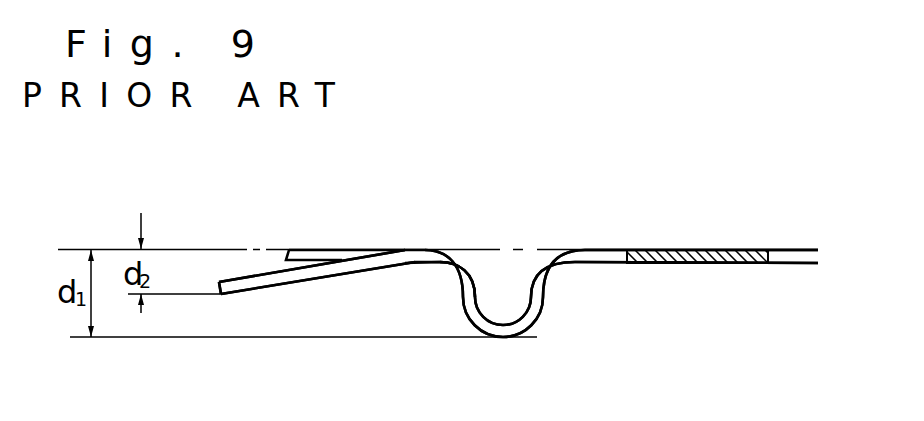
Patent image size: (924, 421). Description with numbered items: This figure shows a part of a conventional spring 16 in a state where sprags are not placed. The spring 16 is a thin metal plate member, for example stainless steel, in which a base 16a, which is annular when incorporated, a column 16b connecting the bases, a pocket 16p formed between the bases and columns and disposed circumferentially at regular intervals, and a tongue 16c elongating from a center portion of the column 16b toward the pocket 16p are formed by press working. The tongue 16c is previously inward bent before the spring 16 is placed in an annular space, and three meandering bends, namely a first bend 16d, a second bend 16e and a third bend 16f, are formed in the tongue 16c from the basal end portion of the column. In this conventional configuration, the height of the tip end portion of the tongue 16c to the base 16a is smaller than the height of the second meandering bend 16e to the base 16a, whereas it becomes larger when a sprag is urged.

The spring 16 is at (697, 248).
The base 16a is at (345, 250).
The column 16b is at (717, 264).
The tongue 16c is at (225, 278).
The first meandering bend 16d is at (573, 262).
The second meandering bend 16e is at (487, 320).
The third meandering bend 16f is at (428, 260).
The pocket 16p is at (296, 250).